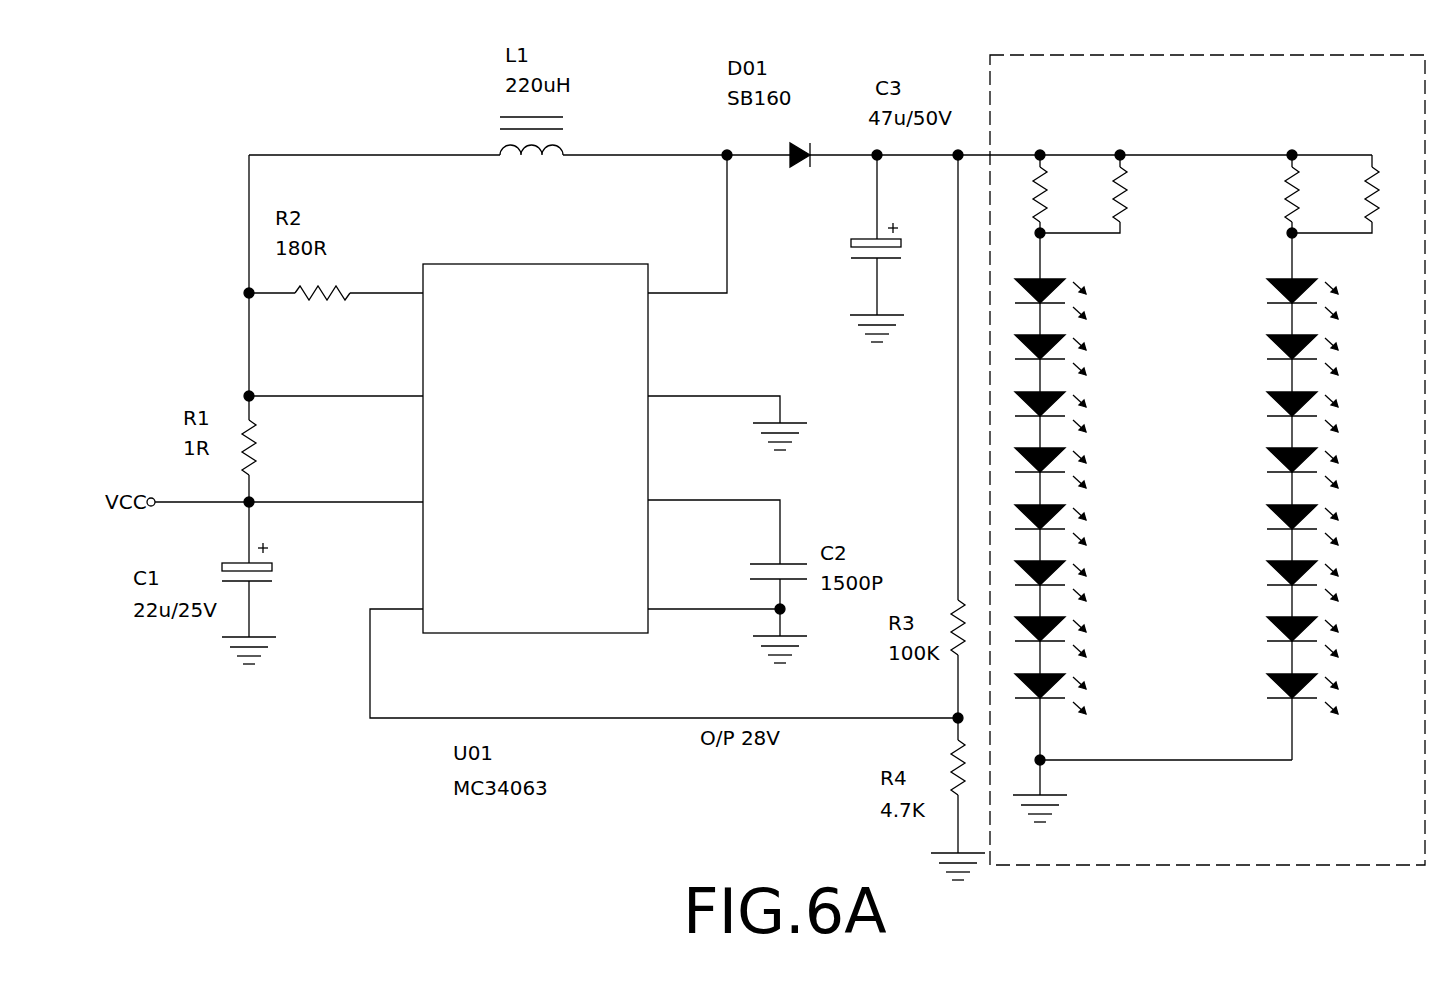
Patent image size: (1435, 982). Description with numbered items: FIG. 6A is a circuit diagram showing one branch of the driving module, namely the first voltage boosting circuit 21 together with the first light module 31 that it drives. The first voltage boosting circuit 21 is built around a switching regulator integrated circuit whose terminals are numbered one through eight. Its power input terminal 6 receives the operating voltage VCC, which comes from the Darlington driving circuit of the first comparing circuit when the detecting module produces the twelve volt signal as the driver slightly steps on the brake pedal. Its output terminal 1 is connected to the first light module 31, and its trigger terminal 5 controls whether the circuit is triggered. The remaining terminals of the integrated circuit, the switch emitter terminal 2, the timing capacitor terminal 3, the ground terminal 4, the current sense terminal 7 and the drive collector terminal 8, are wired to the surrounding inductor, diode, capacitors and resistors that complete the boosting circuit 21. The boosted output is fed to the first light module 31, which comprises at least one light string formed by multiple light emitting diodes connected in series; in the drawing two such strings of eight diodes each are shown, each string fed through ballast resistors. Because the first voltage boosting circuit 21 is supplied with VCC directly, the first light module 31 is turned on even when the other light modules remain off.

The first voltage boosting circuit 21 is at (447, 540).
The first light module 31 is at (1190, 848).
The output terminal 1 is at (687, 224).
The IC pin 2 (switch emitter) 2 is at (727, 409).
The IC pin 3 (timing capacitor) 3 is at (714, 518).
The IC pin 4 (ground) 4 is at (716, 598).
The trigger terminal 5 is at (664, 650).
The power input terminal 6 is at (336, 488).
The IC pin 7 (current sense) 7 is at (336, 382).
The IC pin 8 (drive collector) 8 is at (336, 283).